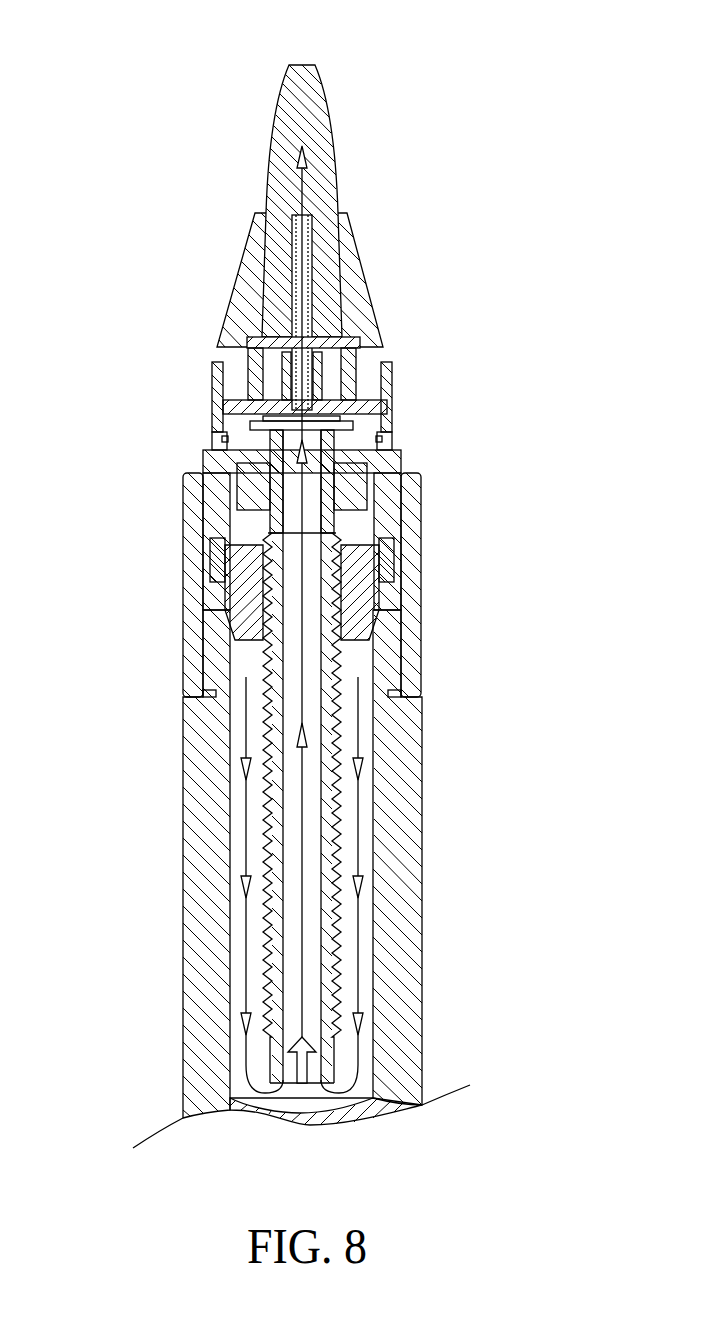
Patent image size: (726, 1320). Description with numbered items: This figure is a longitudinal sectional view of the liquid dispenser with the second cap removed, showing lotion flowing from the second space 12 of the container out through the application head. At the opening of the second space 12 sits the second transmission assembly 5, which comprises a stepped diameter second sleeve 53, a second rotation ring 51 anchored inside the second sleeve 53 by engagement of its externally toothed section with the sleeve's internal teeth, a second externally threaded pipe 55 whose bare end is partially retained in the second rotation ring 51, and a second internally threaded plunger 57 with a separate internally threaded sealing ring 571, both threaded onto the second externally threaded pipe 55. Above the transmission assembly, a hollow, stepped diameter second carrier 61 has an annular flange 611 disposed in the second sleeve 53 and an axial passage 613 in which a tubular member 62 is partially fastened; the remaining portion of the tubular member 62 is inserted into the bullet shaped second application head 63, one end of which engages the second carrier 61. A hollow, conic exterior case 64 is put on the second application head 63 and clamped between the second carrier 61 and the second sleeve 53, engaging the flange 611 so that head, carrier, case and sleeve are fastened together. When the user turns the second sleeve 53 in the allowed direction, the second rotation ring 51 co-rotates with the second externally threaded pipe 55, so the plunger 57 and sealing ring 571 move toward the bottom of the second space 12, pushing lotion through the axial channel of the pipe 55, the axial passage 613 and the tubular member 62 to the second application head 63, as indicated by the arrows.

The second transmission assembly 5 is at (305, 756).
The second space 12 is at (363, 955).
The second rotation ring 51 is at (402, 477).
The second sleeve 53 is at (190, 662).
The second externally threaded pipe 55 is at (328, 835).
The second internally threaded plunger 57 is at (368, 600).
The internally threaded sealing ring 571 is at (400, 693).
The second carrier 61 is at (255, 378).
The annular flange 611 is at (225, 438).
The axial passage 613 is at (385, 397).
The tubular member 62 is at (297, 305).
The second application head 63 is at (295, 118).
The exterior case 64 is at (353, 278).